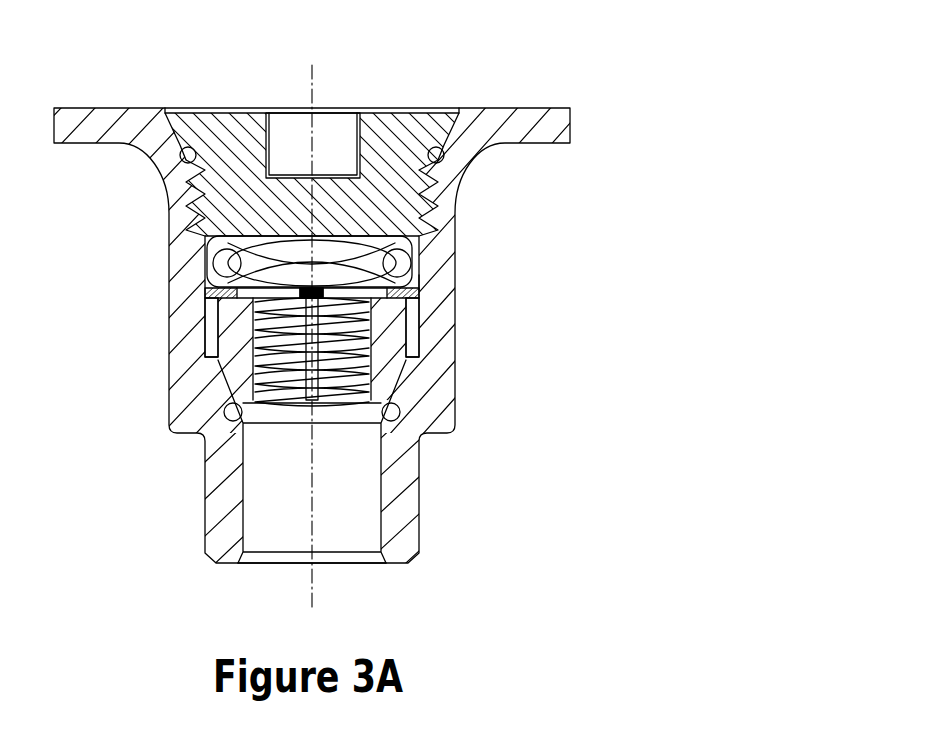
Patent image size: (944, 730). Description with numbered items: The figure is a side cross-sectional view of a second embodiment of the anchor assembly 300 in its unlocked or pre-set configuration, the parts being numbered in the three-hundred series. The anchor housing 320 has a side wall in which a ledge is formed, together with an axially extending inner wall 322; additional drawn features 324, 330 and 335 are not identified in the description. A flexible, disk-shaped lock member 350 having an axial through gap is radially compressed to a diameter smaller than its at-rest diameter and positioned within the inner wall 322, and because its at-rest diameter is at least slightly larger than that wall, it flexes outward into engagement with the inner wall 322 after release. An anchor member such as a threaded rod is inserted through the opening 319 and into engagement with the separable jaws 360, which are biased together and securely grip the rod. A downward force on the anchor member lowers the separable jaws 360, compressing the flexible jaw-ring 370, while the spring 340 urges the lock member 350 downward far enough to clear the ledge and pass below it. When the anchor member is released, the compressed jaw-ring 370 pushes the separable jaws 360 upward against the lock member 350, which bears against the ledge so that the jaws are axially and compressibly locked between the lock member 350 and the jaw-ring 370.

The anchor assembly 300 is at (575, 97).
The opening 319 is at (357, 564).
The anchor housing 320 is at (442, 392).
The inner wall 322 is at (418, 287).
The valve seat 324 is at (204, 290).
The plug 330 is at (397, 128).
The plug seal 335 is at (432, 150).
The spring 340 is at (224, 251).
The lock member 350 is at (420, 293).
The separable jaws 360 is at (390, 332).
The jaw-ring 370 is at (392, 416).